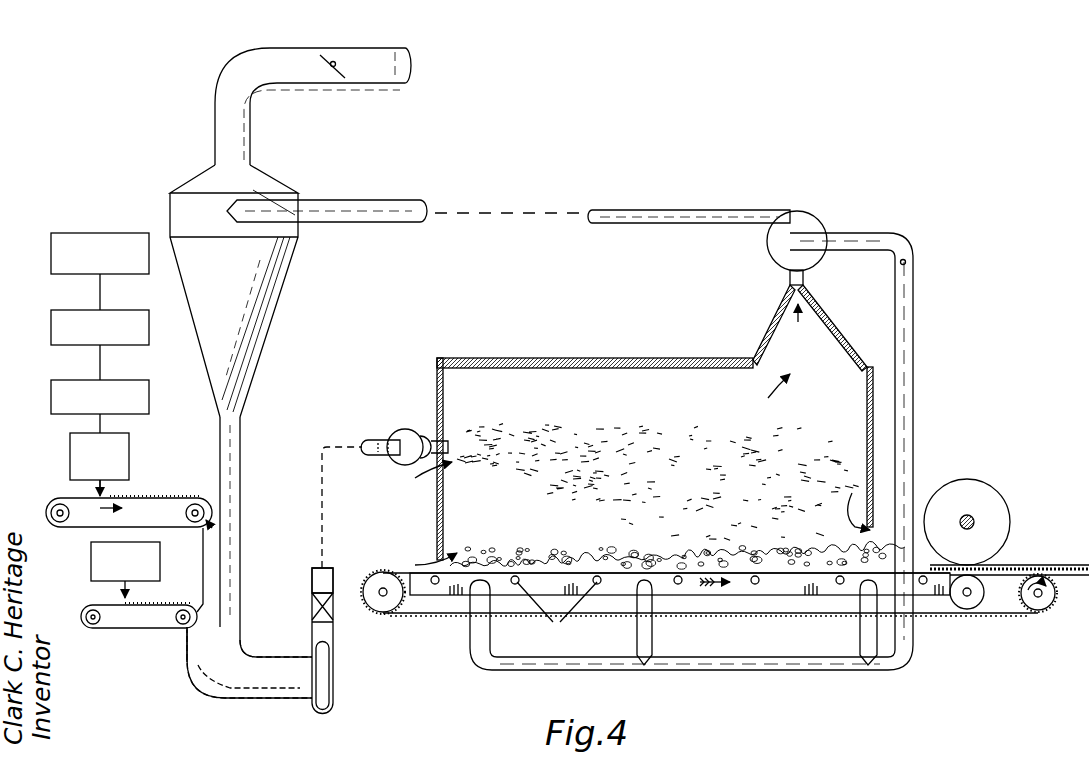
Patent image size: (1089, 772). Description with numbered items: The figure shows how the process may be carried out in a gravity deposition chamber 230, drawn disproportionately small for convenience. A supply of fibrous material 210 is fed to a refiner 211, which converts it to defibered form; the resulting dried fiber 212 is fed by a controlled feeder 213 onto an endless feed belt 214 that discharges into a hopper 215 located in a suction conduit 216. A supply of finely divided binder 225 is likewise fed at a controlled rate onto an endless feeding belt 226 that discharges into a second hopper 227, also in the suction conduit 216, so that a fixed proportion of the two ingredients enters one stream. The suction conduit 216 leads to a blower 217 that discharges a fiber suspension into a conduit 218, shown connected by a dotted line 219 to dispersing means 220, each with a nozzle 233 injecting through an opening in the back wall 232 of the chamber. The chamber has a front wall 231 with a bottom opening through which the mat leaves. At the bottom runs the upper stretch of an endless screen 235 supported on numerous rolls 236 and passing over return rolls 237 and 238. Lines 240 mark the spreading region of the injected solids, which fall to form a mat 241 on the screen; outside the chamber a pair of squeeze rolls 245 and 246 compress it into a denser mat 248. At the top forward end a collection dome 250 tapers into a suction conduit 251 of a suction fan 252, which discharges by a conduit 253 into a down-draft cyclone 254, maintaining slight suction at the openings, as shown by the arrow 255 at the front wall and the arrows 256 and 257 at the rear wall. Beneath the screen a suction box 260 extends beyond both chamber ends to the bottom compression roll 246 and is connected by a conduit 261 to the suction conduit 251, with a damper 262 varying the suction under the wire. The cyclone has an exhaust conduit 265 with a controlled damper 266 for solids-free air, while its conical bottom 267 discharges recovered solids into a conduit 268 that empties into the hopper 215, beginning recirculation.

The supply of fibrous material 210 is at (67, 233).
The refiner 211 is at (60, 309).
The dried fiber 212 is at (55, 380).
The controlled feeder 213 is at (130, 435).
The endless feed belt 214 is at (70, 497).
The hopper 215 is at (222, 520).
The suction conduit 216 is at (237, 652).
The blower 217 is at (328, 691).
The conduit 218 is at (311, 579).
The dotted line 219 is at (335, 444).
The dispersing means 220 is at (397, 457).
The supply of finely divided binder 225 is at (91, 566).
The endless feeding belt 226 is at (92, 606).
The hopper 227 is at (190, 632).
The gravity deposition chamber 230 is at (500, 370).
The front wall 231 is at (866, 413).
The back wall 232 is at (443, 410).
The nozzle 233 is at (446, 441).
The endless screen 235 is at (436, 613).
The rolls 236 is at (556, 622).
The return roll 237 is at (385, 612).
The return roll 238 is at (1042, 610).
The spreading region 240 is at (662, 462).
The mat 241 is at (606, 556).
The squeeze roll 245 is at (968, 488).
The bottom compression roll 246 is at (970, 610).
The compressed mat 248 is at (1025, 560).
The collection dome 250 is at (781, 333).
The suction conduit 251 is at (790, 277).
The suction fan 252 is at (806, 212).
The conduit 253 is at (347, 200).
The down-draft cyclone 254 is at (288, 290).
The arrow 255 is at (849, 503).
The arrow 256 is at (433, 478).
The arrow 257 is at (446, 560).
The suction box 260 is at (728, 598).
The conduit 261 is at (885, 233).
The damper 262 is at (915, 264).
The exhaust conduit 265 is at (275, 56).
The controlled damper 266 is at (336, 62).
The conical bottom 267 is at (232, 397).
The conduit 268 is at (241, 452).